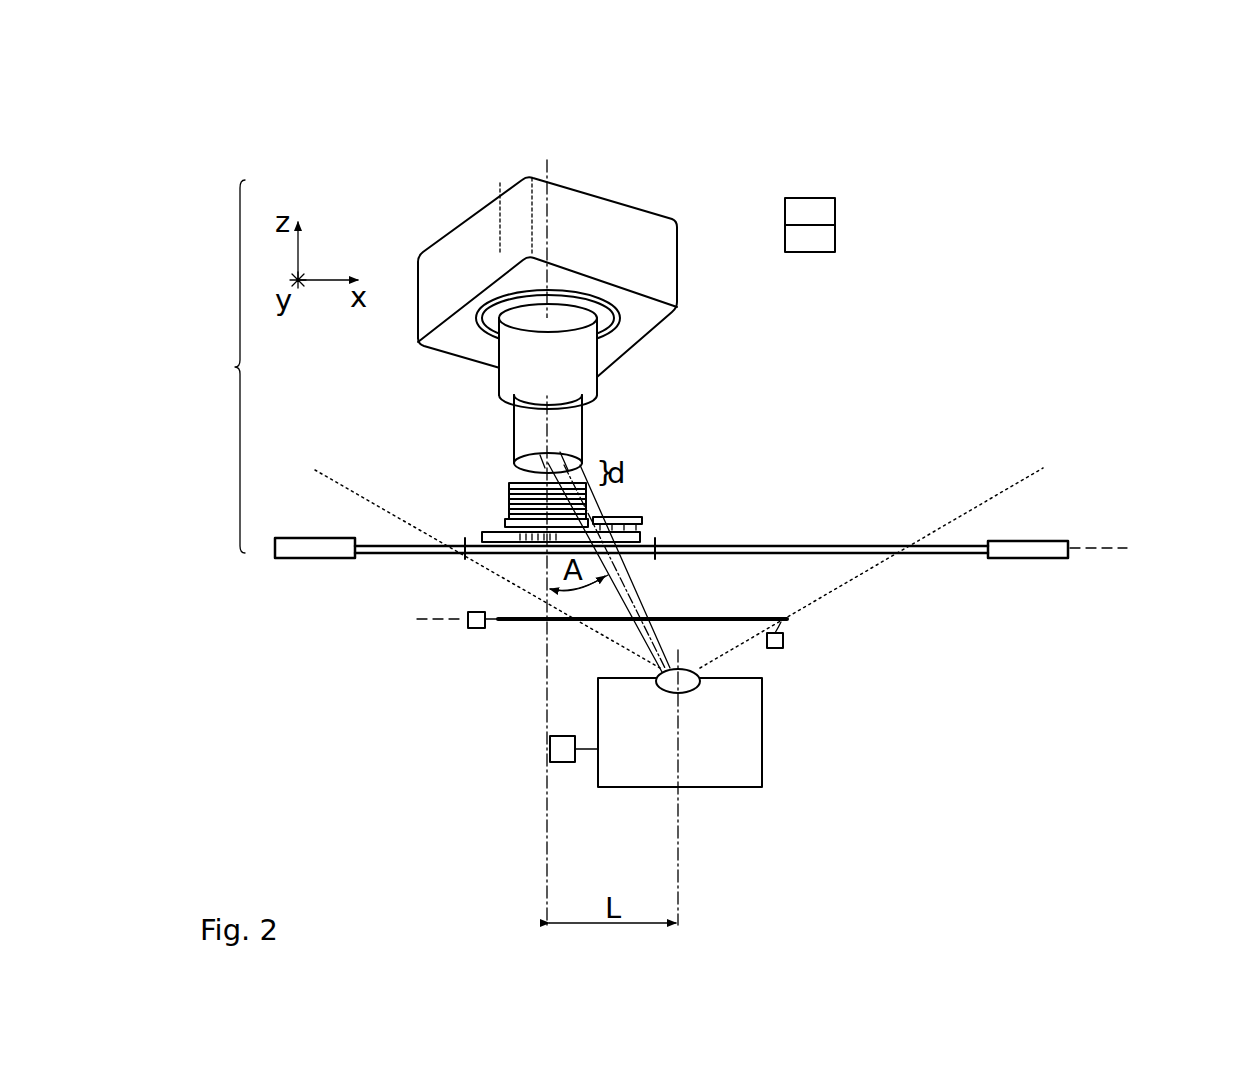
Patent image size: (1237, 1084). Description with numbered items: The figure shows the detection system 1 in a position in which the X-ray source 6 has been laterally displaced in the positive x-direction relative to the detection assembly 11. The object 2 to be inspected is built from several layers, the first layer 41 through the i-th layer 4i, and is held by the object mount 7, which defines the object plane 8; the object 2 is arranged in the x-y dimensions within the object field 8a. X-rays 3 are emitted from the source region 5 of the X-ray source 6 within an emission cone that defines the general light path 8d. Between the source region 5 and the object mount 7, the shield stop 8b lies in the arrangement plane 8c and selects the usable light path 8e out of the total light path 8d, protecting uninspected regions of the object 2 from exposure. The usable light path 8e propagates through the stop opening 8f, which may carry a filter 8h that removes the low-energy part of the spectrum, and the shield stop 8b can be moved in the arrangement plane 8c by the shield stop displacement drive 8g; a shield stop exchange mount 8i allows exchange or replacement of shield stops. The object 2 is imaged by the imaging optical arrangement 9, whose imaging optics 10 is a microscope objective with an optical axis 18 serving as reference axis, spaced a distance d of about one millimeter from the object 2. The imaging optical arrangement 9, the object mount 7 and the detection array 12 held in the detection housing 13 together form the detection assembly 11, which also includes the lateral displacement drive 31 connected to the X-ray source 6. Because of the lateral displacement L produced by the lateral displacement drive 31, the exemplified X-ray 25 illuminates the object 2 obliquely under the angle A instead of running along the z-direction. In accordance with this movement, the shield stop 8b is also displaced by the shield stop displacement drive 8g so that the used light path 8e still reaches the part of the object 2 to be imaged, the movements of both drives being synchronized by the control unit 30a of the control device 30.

The detection system 1 is at (677, 126).
The object 2 is at (626, 512).
The X-rays 3 is at (1000, 493).
The layer 41 is at (517, 487).
The layers 4i is at (508, 523).
The source region 5 is at (683, 686).
The X-ray source 6 is at (732, 777).
The object mount 7 is at (285, 538).
The object plane 8 is at (1090, 548).
The object field 8a is at (660, 557).
The shield stop 8b is at (787, 618).
The arrangement plane 8c is at (457, 621).
The general light path 8d is at (490, 570).
The usable light path 8e is at (641, 545).
The stop opening 8f is at (640, 662).
The shield stop displacement drive 8g is at (477, 630).
The filter 8h is at (635, 630).
The shield stop exchange mount 8i is at (784, 641).
The imaging optical arrangement 9 is at (603, 395).
The imaging optics 10 is at (522, 432).
The detection assembly 11 is at (226, 366).
The detection array 12 is at (562, 190).
The detection housing 13 is at (547, 233).
The optical axis 18 is at (540, 597).
The X-ray 25 is at (606, 598).
The control device 30 is at (807, 186).
The control unit 30a is at (826, 240).
The lateral displacement drive 31 is at (558, 756).